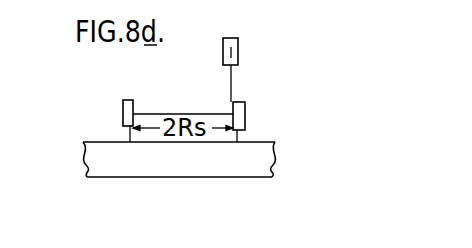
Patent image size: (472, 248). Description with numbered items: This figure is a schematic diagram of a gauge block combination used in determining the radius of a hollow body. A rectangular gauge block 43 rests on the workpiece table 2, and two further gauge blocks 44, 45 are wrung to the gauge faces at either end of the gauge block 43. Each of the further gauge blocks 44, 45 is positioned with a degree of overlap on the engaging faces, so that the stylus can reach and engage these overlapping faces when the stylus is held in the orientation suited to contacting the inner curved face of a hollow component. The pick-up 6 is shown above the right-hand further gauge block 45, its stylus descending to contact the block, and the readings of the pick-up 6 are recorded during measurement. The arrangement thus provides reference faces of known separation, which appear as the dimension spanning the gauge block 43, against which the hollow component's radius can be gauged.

The workpiece table 2 is at (115, 167).
The pick-up 6 is at (226, 52).
The gauge block 43 is at (176, 114).
The further gauge block 44 is at (126, 112).
The further gauge block 45 is at (245, 104).